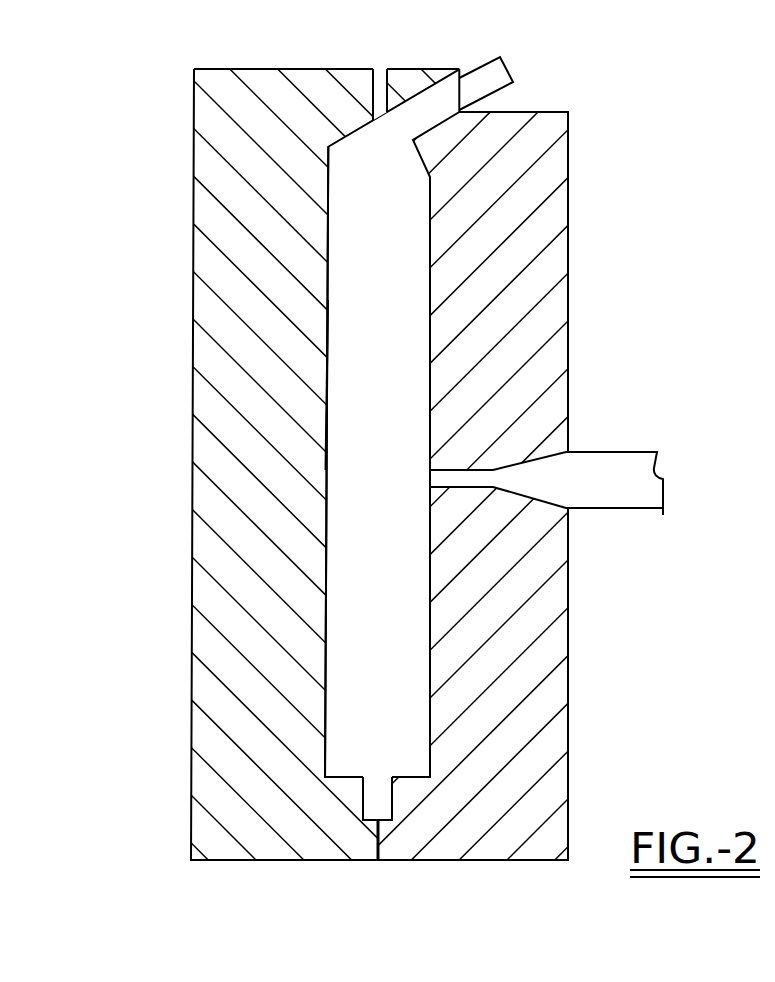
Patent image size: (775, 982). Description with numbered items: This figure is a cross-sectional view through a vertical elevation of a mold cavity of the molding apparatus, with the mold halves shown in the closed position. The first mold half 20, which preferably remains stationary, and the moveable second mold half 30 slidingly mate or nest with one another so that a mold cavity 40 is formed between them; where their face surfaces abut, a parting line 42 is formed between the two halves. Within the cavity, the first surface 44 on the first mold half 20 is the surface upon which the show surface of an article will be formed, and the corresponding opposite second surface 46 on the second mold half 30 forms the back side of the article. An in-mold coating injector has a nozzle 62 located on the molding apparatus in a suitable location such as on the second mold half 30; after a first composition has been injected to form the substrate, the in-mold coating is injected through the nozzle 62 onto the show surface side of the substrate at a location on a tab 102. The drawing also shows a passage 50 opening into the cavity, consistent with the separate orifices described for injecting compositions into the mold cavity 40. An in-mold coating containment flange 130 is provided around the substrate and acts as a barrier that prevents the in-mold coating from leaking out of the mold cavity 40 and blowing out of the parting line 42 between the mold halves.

The first mold half 20 is at (574, 336).
The second mold half 30 is at (186, 314).
The mold cavity 40 is at (340, 578).
The parting line 42 is at (372, 847).
The first surface 44 is at (335, 386).
The second surface 46 is at (422, 424).
The injection port 50 is at (623, 444).
The nozzle 62 is at (380, 72).
The tab 102 is at (478, 70).
The in-mold coating containment flange 130 is at (390, 803).